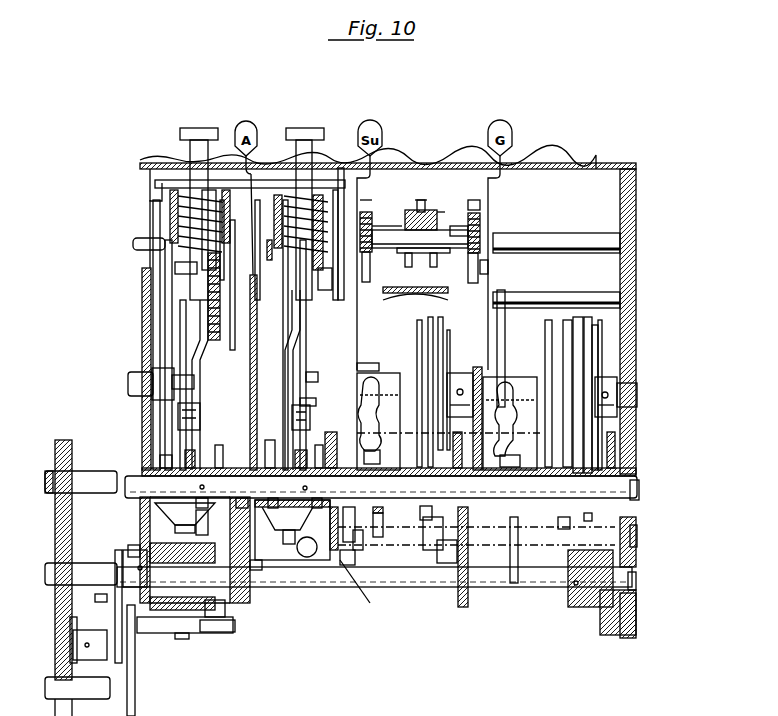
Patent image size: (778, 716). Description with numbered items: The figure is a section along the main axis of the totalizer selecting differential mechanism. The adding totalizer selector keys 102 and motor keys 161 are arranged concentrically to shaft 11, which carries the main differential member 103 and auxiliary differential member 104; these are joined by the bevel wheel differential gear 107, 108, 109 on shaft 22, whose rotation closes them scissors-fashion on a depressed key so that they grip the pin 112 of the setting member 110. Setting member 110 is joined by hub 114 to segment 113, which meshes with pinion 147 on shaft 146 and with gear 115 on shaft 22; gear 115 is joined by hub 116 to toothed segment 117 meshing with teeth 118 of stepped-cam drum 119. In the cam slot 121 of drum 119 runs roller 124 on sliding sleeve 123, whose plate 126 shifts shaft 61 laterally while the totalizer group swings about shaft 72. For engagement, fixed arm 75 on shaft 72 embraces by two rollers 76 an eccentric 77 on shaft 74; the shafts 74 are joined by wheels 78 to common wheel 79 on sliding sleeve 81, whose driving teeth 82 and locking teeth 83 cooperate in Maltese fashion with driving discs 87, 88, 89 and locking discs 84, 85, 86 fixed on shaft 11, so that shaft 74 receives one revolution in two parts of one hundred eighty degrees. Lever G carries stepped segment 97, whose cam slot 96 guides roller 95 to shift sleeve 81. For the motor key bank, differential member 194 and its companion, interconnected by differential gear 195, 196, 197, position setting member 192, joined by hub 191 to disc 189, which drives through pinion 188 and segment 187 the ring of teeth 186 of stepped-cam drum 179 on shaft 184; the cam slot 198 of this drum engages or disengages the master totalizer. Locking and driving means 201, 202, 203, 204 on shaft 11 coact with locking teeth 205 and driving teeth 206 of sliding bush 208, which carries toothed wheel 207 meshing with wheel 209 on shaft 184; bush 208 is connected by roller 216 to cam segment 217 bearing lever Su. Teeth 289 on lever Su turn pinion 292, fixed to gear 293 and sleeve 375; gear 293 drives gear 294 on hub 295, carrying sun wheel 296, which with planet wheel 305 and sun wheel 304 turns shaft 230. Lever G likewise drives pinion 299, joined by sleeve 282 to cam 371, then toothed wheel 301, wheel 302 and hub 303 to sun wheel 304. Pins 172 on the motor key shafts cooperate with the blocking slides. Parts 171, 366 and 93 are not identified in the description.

The adding totalizer selector keys 102 is at (200, 128).
The motor release keys 161 is at (301, 128).
The pins 172 is at (356, 168).
The gear 294 is at (367, 217).
The hub 295 is at (378, 227).
The sun wheel 296 is at (400, 217).
The planet wheel 305 is at (428, 218).
The sun wheel 304 is at (436, 215).
The toothed wheel 302 is at (472, 213).
The rotary hub 303 is at (457, 230).
The toothed wheel 301 is at (483, 264).
The pinion 299 is at (482, 272).
The shaft 230 is at (580, 237).
The pin 112 is at (185, 270).
The vertical bar 171 is at (163, 305).
The hub 366 is at (333, 303).
The gear 293 is at (366, 272).
The pinion 292 is at (383, 262).
The sleeve 282 is at (440, 287).
The sleeve 375 is at (473, 257).
The shaft 146 is at (502, 297).
The driving disc 87 is at (576, 322).
The locking disc 86 is at (586, 322).
The locking disc 85 is at (594, 330).
The main differential member 103 is at (190, 355).
The driving disc 204 is at (422, 325).
The driving disc 203 is at (422, 333).
The locking disc 202 is at (432, 332).
The driving disc 89 is at (547, 325).
The driving disc 88 is at (560, 350).
The locking disc 84 is at (600, 330).
The pinion 147 is at (237, 318).
The segment 113 is at (218, 378).
The lever 93 is at (305, 367).
The cam 371 is at (325, 355).
The set of teeth 289 is at (360, 367).
The locking disc 201 is at (442, 353).
The shaft 11 is at (128, 383).
The auxiliary differential member 104 is at (194, 382).
The cam segment 217 is at (383, 400).
The stepped cam slot 96 is at (508, 395).
The setting member 110 is at (200, 417).
The hub 114 is at (200, 419).
The differential member 194 is at (316, 378).
The roller 216 is at (378, 450).
The hub 191 is at (314, 403).
The setting member 192 is at (305, 418).
The roller 95 is at (520, 463).
The shaft 22 is at (137, 477).
The gear 115 is at (215, 494).
The hub 116 is at (249, 494).
The pinion 188 is at (283, 494).
The disc 189 is at (326, 494).
The sliding bush 208 is at (383, 508).
The locking teeth 205 is at (438, 500).
The stepped segment 97 is at (496, 476).
The sliding sleeve 81 is at (639, 490).
The bevel wheel 107 is at (177, 527).
The bevel pinion 109 is at (208, 530).
The segment 187 is at (368, 521).
The driving teeth 206 is at (423, 518).
The toothed wheel 207 is at (468, 520).
The locking teeth 83 is at (588, 521).
The rollers 76 is at (128, 552).
The eccentric 77 is at (125, 563).
The stepped-cam drum 119 is at (142, 557).
The differential gear 195 is at (287, 537).
The differential gear 197 is at (350, 540).
The driving teeth 82 is at (562, 529).
The common wheel 79 is at (637, 538).
The bevel wheel 108 is at (338, 575).
The ring of teeth 186 is at (342, 558).
The shaft 184 is at (412, 540).
The fixed arm 75 is at (80, 613).
The toothed segment 117 is at (255, 570).
The differential gear 196 is at (289, 544).
The stepped-cam drum 179 is at (310, 557).
The stepped cam slot 198 is at (362, 590).
The shaft 74 is at (416, 588).
The toothed wheel 209 is at (447, 565).
The teeth 118 is at (235, 626).
The shaft 72 is at (100, 657).
The cam slot 121 is at (163, 633).
The sliding sleeve 123 is at (186, 640).
The roller 124 is at (215, 617).
The plate 126 is at (135, 677).
The shaft 61 is at (78, 690).
The wheels 78 is at (598, 607).